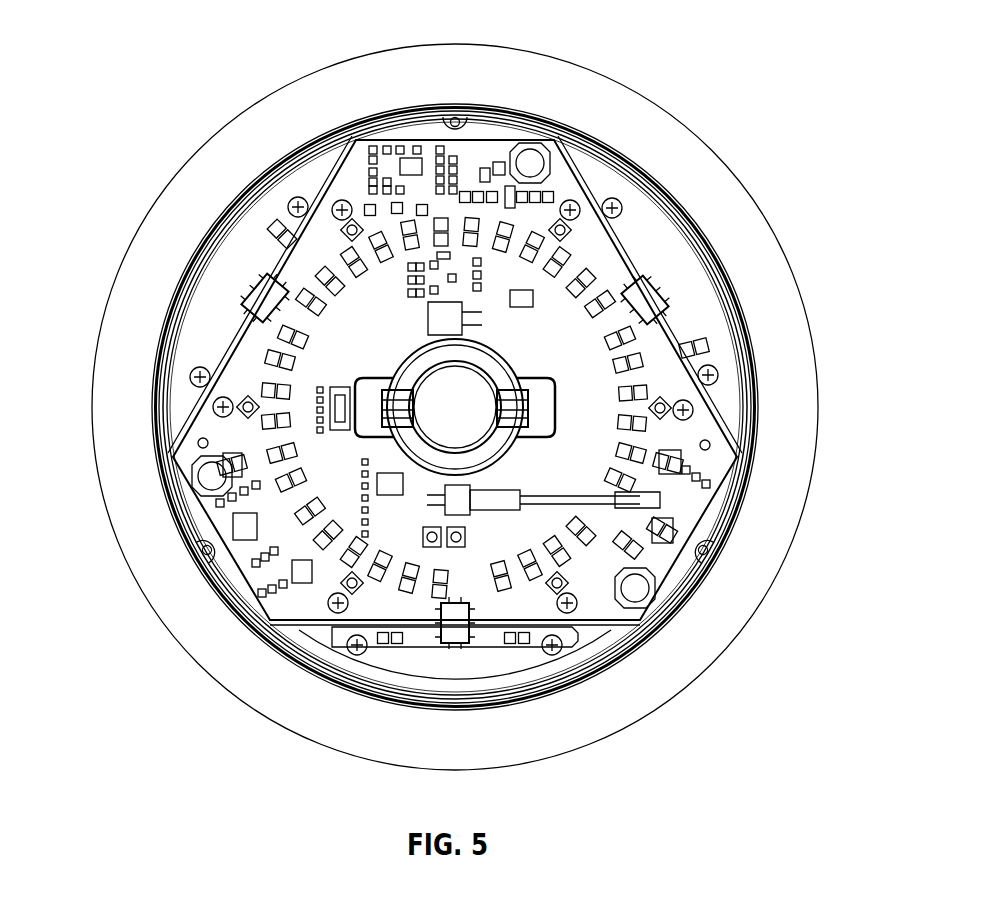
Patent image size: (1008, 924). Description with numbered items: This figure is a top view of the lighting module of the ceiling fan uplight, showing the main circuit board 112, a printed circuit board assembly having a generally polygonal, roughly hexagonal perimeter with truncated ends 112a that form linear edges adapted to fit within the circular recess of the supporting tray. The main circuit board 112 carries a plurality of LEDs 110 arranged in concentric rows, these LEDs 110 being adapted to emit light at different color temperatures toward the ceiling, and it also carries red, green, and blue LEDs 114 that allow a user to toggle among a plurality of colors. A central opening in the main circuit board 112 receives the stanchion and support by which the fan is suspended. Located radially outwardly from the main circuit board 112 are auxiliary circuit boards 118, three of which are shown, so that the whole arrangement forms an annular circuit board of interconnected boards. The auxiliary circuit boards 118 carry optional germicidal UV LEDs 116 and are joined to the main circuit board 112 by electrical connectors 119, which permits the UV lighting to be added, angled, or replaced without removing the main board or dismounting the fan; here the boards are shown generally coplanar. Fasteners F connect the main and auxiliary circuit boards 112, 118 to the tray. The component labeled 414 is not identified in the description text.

The LEDs 110 is at (647, 265).
The circuit board 112 is at (703, 432).
The truncated ends 112a is at (512, 138).
The red, green, and blue LEDs 114 is at (332, 233).
The UV LEDs 116 is at (530, 650).
The auxiliary circuit boards 118 is at (265, 247).
The electrical connectors 119 is at (243, 290).
The component 414 is at (656, 414).
The fasteners F is at (613, 193).